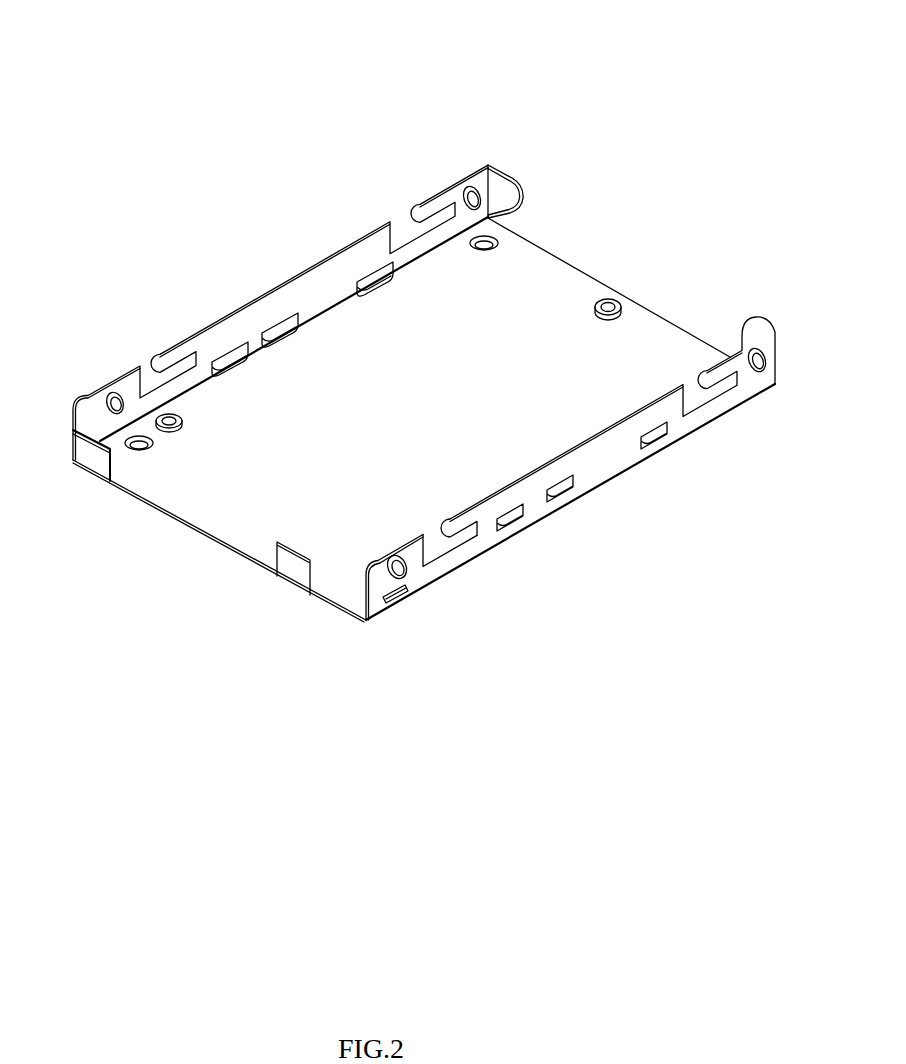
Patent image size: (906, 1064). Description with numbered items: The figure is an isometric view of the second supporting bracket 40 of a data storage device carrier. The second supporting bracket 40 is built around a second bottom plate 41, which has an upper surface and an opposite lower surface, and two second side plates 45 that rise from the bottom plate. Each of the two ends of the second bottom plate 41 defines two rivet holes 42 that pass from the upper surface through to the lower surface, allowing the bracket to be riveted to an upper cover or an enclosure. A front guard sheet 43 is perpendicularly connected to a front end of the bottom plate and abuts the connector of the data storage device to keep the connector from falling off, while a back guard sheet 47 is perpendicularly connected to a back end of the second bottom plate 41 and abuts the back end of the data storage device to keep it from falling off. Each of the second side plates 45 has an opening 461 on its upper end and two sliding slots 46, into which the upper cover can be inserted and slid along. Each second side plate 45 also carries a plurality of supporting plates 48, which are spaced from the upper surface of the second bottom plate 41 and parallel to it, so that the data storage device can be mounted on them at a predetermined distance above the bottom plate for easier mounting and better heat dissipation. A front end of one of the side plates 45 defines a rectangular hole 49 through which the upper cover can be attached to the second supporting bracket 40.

The second supporting bracket 40 is at (299, 31).
The second bottom plate 41 is at (188, 498).
The rivet hole 42 is at (137, 450).
The front guard sheet 43 is at (293, 573).
The second side plate 45 is at (600, 453).
The sliding slot 46 is at (467, 537).
The opening 461 is at (432, 541).
The back guard sheet 47 is at (513, 192).
The supporting plate 48 is at (376, 268).
The rectangular hole 49 is at (398, 598).